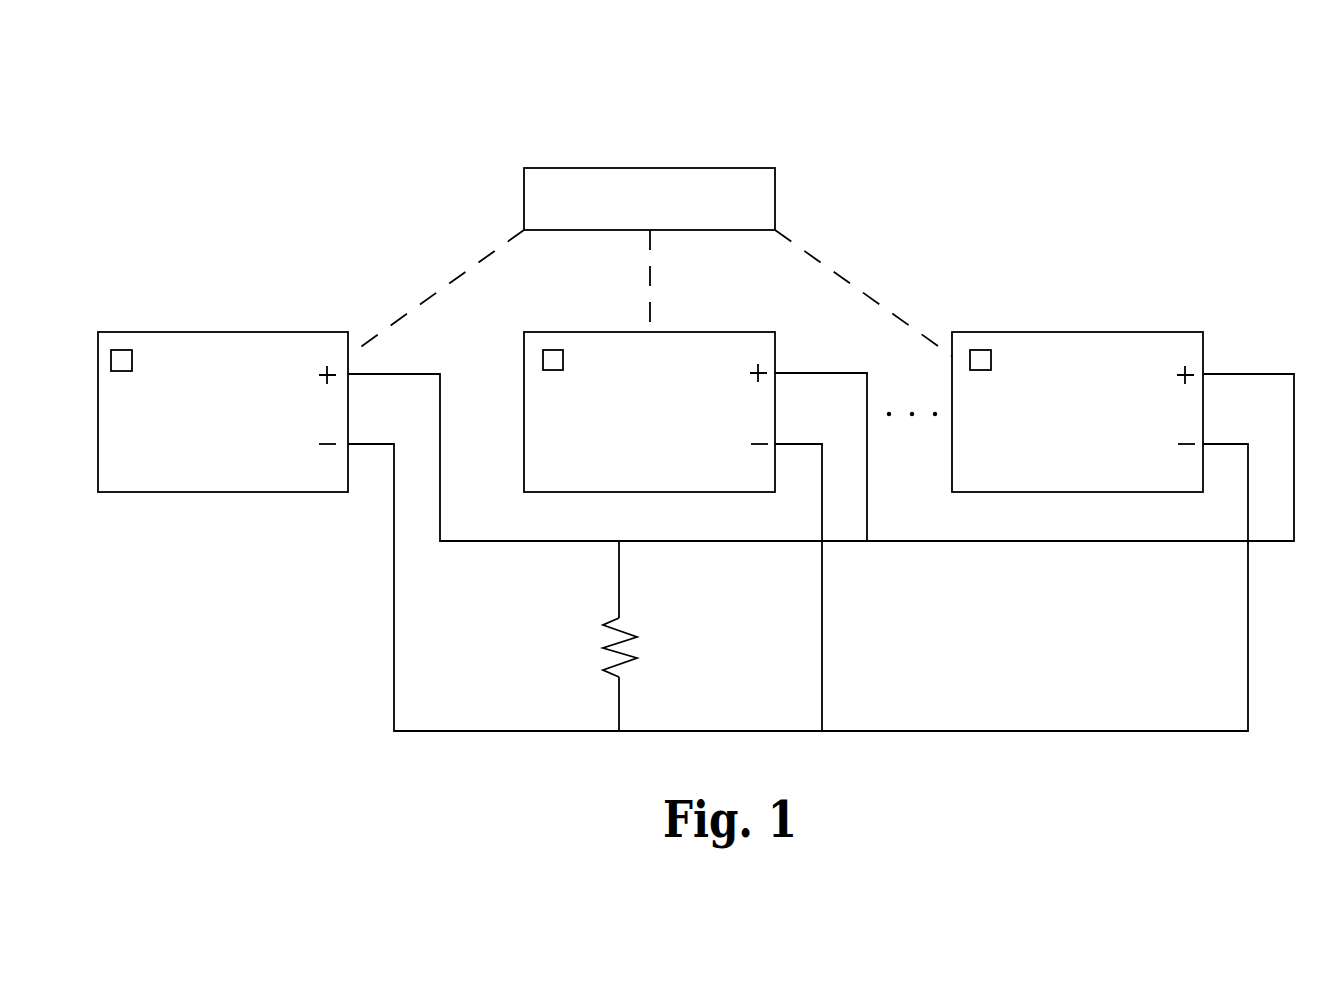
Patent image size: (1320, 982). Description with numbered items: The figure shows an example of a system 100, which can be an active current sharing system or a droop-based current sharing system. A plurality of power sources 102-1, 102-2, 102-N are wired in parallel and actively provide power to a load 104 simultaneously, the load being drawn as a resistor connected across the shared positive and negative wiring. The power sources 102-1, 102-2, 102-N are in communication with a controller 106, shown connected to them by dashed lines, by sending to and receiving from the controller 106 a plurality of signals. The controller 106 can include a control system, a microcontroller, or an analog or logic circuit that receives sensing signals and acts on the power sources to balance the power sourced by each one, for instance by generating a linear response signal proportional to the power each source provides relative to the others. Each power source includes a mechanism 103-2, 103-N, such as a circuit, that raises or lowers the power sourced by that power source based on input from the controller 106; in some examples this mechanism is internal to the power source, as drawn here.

The system 100 is at (720, 110).
The power source 102-1 is at (246, 429).
The power source 102-2 is at (679, 431).
The power source 102-N is at (1106, 430).
The mechanism 103-N is at (122, 360).
The mechanism 103-2 is at (555, 360).
The load 104 is at (625, 648).
The controller 106 is at (669, 212).